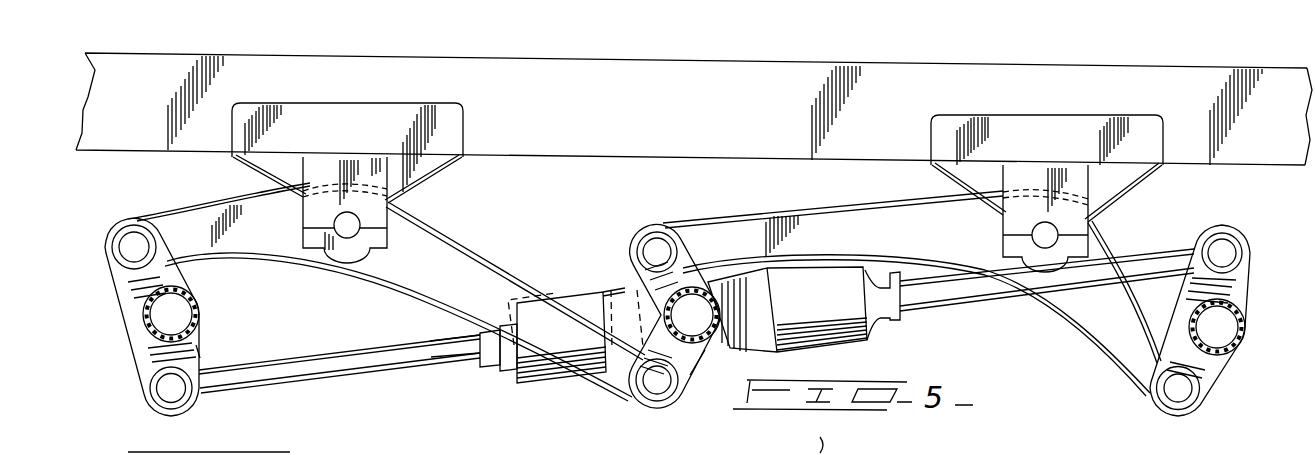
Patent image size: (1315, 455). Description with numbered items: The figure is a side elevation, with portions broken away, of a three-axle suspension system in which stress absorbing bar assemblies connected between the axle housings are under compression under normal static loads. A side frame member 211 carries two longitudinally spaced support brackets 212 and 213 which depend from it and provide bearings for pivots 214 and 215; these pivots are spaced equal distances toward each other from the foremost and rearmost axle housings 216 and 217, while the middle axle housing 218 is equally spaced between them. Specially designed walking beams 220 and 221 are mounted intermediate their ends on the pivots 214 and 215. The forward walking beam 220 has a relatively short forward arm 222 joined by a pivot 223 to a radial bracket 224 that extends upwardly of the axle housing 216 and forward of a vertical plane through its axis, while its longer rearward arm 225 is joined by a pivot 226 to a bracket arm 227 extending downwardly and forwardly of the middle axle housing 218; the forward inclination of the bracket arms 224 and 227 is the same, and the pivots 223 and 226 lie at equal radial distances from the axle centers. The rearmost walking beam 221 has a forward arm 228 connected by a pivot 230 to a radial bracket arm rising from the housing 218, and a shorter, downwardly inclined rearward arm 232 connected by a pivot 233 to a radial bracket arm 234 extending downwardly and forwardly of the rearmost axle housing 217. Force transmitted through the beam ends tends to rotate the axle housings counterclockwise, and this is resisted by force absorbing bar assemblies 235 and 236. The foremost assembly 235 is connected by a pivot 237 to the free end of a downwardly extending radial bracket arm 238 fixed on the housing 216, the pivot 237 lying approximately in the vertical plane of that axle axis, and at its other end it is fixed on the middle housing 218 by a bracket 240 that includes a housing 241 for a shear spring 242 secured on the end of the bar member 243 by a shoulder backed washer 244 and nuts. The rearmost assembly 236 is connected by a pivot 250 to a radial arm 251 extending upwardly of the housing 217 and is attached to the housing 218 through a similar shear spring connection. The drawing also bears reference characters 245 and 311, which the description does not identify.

The side frame member 211 is at (728, 73).
The support bracket 212 is at (432, 172).
The support bracket 213 is at (1127, 188).
The pivot 214 is at (347, 232).
The pivot 215 is at (1045, 243).
The foremost axle housing 216 is at (193, 307).
The rearmost axle housing 217 is at (1246, 328).
The middle axle housing 218 is at (733, 352).
The forward walking beam 220 is at (448, 229).
The rearmost walking beam 221 is at (798, 203).
The forward arm 222 is at (194, 206).
The pivot 223 is at (128, 247).
The radial bracket 224 is at (133, 286).
The rearward arm 225 is at (525, 293).
The pivot 226 is at (655, 386).
The bracket arm 227 is at (697, 362).
The forward arm 228 is at (730, 232).
The pivot 230 is at (656, 250).
The rearward arm 232 is at (1093, 338).
The pivot 233 is at (1181, 393).
The radial bracket arm 234 is at (1210, 372).
The force absorbing bar assembly 235 is at (350, 380).
The force absorbing bar assembly 236 is at (944, 318).
The pivot 237 is at (178, 389).
The radial bracket arm 238 is at (190, 355).
The bracket 240 is at (633, 278).
The housing 241 is at (560, 380).
The shear spring 242 is at (512, 369).
The bar member 243 is at (442, 357).
The shoulder backed washer 244 is at (490, 366).
The center bearing 245 is at (597, 307).
The pivot 250 is at (1225, 255).
The radial arm 251 is at (1230, 297).
The frame portion 311 is at (806, 438).